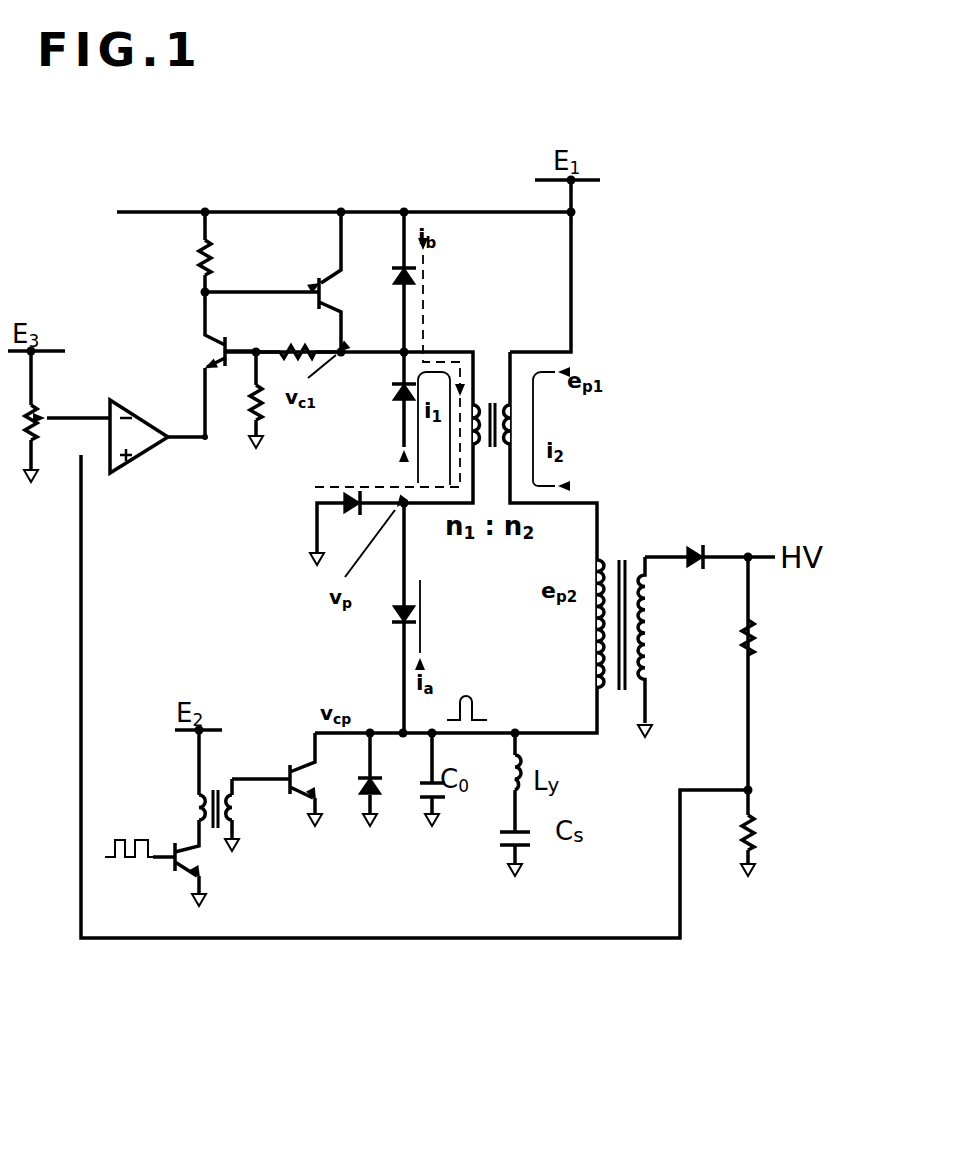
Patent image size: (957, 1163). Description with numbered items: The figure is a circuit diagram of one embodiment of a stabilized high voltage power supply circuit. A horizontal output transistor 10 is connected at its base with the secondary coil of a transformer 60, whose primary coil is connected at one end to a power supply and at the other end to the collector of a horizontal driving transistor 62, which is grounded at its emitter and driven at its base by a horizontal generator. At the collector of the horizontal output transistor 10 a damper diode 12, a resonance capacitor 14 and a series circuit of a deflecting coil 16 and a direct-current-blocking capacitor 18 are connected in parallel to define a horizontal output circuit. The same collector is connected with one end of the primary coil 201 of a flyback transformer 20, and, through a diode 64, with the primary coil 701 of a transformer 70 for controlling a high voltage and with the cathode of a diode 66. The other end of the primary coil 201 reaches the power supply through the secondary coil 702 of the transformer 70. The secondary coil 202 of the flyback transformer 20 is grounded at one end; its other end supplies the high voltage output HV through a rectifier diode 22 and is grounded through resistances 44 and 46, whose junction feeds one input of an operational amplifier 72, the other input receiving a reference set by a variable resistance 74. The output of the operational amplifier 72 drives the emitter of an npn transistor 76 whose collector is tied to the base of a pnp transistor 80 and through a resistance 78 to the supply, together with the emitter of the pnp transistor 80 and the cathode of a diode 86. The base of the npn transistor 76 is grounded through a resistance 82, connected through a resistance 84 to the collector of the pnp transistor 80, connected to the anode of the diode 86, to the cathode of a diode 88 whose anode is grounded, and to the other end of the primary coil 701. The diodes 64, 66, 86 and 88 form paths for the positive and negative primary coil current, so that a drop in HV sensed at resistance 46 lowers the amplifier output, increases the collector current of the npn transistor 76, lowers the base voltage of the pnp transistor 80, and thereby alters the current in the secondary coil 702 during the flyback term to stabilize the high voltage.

The horizontal output transistor 10 is at (318, 777).
The damper diode 12 is at (383, 780).
The resonance capacitor 14 is at (455, 784).
The deflecting coil 16 is at (533, 772).
The capacitor preventing direct current 18 is at (533, 838).
The flyback transformer 20 is at (610, 607).
The high voltage rectifier diode 22 is at (713, 548).
The resistance 44 is at (760, 638).
The resistance 46 is at (760, 838).
The transformer 60 is at (220, 781).
The horizontal driving transistor 62 is at (169, 866).
The diode 64 is at (412, 616).
The diode 66 is at (351, 494).
The transformer for controlling a high voltage 70 is at (505, 385).
The primary coil 701 is at (458, 428).
The secondary coil 702 is at (523, 418).
The operational amplifier 72 is at (142, 458).
The variable resistance 74 is at (46, 410).
The npn transistor 76 is at (205, 348).
The resistance 78 is at (215, 267).
The pnp transistor 80 is at (344, 298).
The resistance 82 is at (236, 401).
The resistance 84 is at (298, 340).
The diode 86 is at (420, 278).
The diode 88 is at (395, 390).
The primary coil 201 is at (587, 613).
The secondary coil 202 is at (655, 597).